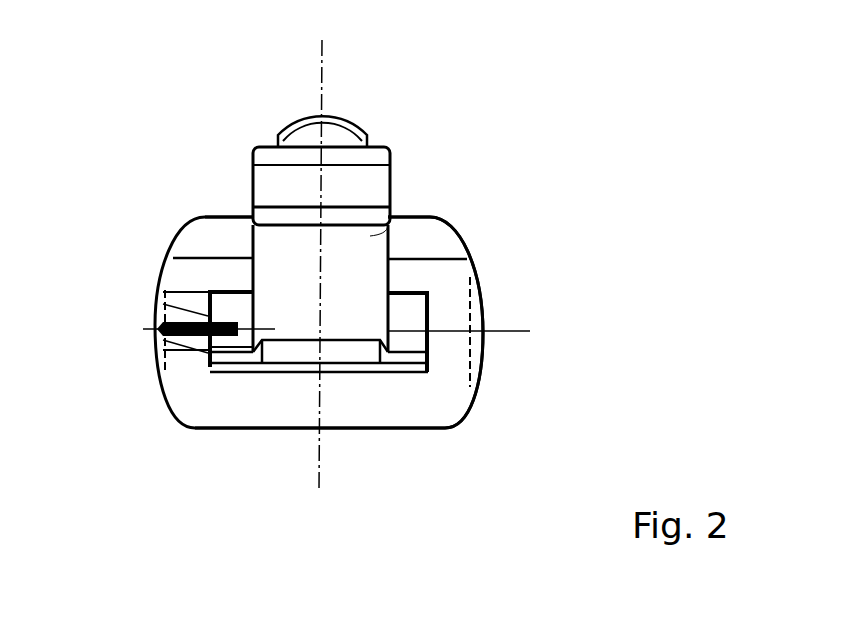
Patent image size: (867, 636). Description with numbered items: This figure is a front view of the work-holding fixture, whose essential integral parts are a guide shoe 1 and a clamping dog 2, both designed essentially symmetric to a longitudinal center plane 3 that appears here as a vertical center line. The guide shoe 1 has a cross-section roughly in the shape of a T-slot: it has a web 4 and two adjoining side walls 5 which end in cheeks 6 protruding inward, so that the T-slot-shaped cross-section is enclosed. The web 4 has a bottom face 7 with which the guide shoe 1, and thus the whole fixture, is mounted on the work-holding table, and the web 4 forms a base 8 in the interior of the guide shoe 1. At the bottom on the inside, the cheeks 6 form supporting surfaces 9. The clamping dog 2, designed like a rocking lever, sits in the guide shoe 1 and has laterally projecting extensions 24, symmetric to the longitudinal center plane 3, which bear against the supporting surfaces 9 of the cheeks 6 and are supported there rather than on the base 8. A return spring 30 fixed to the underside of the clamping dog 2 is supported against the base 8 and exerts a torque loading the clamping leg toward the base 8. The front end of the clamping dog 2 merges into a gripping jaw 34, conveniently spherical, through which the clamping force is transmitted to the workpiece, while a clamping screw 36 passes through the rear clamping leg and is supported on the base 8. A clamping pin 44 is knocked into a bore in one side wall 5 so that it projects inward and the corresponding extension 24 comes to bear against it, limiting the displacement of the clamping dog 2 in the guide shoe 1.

The guide shoe 1 is at (472, 426).
The clamping dog 2 is at (272, 106).
The longitudinal center plane 3 is at (324, 62).
The web 4 is at (345, 410).
The side walls 5 is at (168, 367).
The cheeks 6 is at (228, 243).
The bottom face 7 is at (417, 428).
The base 8 is at (375, 363).
The supporting surfaces 9 is at (232, 290).
The extensions 24 is at (225, 312).
The return spring 30 is at (278, 353).
The gripping jaw 34 is at (349, 228).
The clamping screw 36 is at (300, 108).
The clamping pin 44 is at (200, 333).